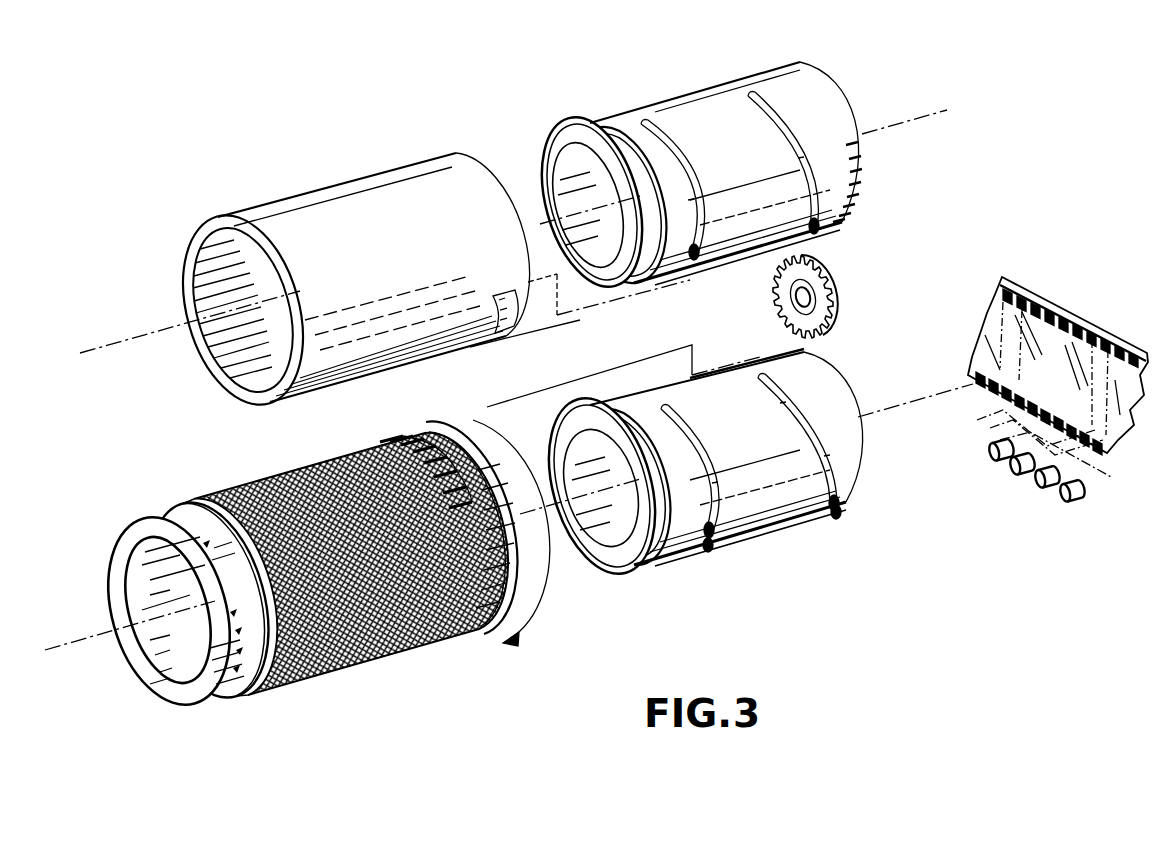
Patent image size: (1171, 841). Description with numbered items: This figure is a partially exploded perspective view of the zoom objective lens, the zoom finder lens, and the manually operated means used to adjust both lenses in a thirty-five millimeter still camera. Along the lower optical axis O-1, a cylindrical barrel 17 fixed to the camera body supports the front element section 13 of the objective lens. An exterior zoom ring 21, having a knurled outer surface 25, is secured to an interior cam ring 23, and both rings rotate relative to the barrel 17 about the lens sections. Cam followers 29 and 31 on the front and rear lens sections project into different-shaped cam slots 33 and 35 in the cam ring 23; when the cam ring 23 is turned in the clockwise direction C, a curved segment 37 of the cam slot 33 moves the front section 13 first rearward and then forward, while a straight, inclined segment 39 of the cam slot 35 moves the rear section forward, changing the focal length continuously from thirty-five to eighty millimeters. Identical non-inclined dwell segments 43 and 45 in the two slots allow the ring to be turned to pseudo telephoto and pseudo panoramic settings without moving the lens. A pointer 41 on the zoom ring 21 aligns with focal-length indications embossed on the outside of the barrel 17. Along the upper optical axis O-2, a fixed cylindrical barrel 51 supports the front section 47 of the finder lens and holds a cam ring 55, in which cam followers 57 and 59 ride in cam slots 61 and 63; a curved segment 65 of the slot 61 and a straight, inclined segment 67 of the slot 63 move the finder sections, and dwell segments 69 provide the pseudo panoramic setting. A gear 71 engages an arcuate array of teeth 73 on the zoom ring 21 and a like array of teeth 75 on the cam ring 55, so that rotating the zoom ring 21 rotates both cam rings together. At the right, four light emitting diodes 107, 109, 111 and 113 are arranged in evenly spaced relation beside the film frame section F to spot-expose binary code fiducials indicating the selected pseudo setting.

The front element section 13 is at (600, 572).
The cylindrical barrel 17 is at (302, 585).
The zoom ring 21 is at (302, 574).
The cam ring 23 is at (675, 479).
The knurled outer surface 25 is at (355, 668).
The cam follower 29 is at (711, 520).
The cam follower 31 is at (835, 482).
The cam slot 33 is at (704, 448).
The cam slot 35 is at (807, 434).
The curved segment 37 is at (714, 483).
The straight, inclined segment 39 is at (826, 456).
The pointer 41 is at (236, 569).
The dwell segments 43 is at (782, 402).
The dwell segments 45 is at (712, 548).
The front element section 47 is at (552, 185).
The cylindrical barrel 51 is at (303, 200).
The cam ring 55 is at (707, 186).
The cam follower 57 is at (700, 250).
The cam follower 59 is at (810, 211).
The cam slot 61 is at (686, 158).
The cam slot 63 is at (769, 146).
The curved segment 65 is at (690, 200).
The straight, inclined segment 67 is at (800, 158).
The dwell segments 69 is at (693, 262).
The gear 71 is at (848, 295).
The arcuate array of teeth 73 is at (425, 438).
The array of teeth 75 is at (856, 180).
The light emitting diode 107 is at (996, 447).
The light emitting diode 109 is at (1012, 470).
The light emitting diode 111 is at (1040, 484).
The light emitting diode 113 is at (1076, 499).
The frame section F is at (1012, 282).
The clockwise direction C is at (511, 538).
The optical axis O-1 is at (898, 398).
The optical axis O-2 is at (937, 106).